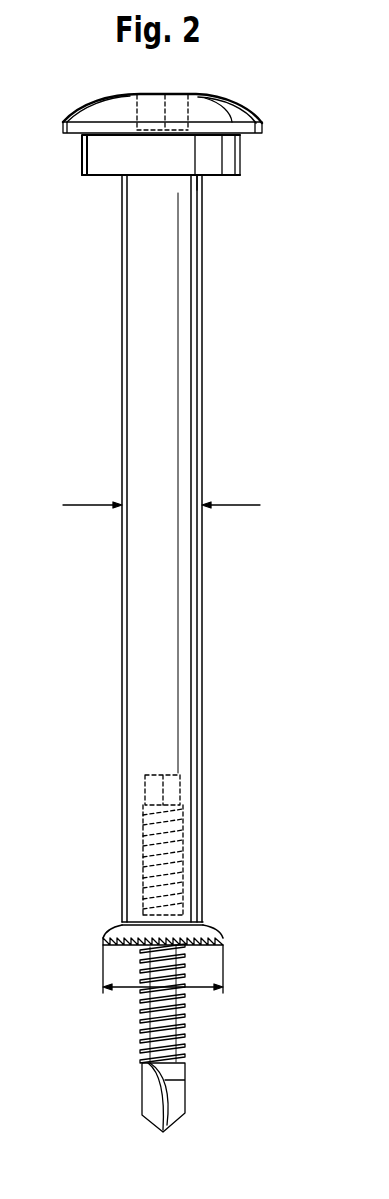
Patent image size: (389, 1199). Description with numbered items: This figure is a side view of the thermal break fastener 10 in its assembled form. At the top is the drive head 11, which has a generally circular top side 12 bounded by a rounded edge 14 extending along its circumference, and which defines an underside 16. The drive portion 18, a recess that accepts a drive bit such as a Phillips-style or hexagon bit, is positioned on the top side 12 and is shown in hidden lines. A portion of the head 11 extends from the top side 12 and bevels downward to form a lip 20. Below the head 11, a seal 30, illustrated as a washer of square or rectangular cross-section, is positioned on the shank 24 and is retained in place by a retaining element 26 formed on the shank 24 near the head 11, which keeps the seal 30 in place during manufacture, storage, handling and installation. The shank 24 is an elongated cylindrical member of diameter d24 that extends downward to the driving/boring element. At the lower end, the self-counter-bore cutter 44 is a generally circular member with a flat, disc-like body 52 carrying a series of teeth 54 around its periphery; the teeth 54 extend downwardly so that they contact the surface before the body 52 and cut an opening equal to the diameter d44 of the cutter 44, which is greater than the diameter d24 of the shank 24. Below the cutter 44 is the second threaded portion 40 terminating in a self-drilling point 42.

The thermal break fastener 10 is at (165, 92).
The drive head 11 is at (102, 99).
The top side 12 is at (200, 94).
The rounded edge 14 is at (250, 108).
The underside 16 is at (73, 137).
The drive portion 18 is at (185, 112).
The lip 20 is at (248, 137).
The shank 24 is at (122, 432).
The retaining element 26 is at (120, 177).
The seal 30 is at (228, 177).
The diameter of shank d24 is at (225, 505).
The second threaded portion 40 is at (140, 1019).
The self-drilling point 42 is at (180, 1115).
The self-counter-bore cutter 44 is at (217, 923).
The body 52 is at (120, 922).
The teeth 54 is at (208, 943).
The diameter of cutter d44 is at (203, 988).